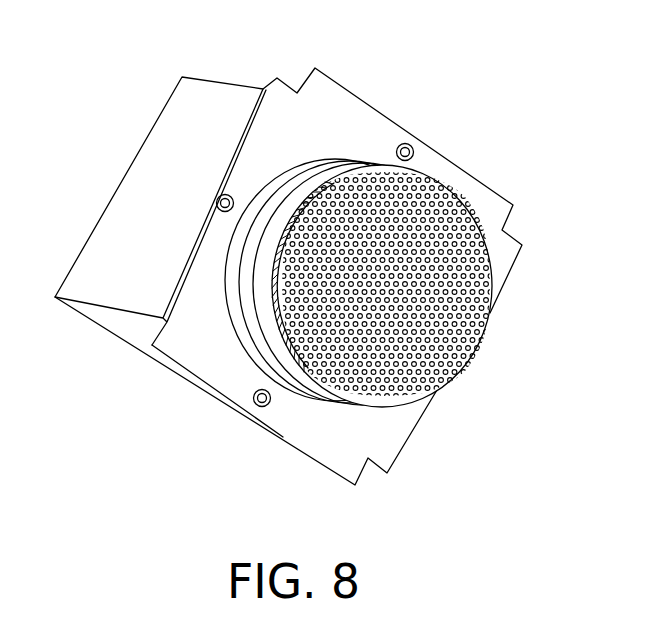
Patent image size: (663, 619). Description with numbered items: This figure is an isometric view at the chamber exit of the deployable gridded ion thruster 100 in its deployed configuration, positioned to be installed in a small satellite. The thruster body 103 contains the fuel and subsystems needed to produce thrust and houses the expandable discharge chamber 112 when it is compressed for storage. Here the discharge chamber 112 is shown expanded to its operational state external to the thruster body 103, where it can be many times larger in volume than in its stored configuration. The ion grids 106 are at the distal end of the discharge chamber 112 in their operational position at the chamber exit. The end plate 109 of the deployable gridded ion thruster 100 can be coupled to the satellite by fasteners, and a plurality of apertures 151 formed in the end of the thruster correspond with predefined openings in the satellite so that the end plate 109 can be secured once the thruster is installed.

The deployable gridded ion thruster 100 is at (115, 48).
The thruster body 103 is at (152, 148).
The ion grids 106 is at (427, 210).
The end plate 109 is at (488, 225).
The discharge chamber 112 is at (218, 282).
The apertures 151 is at (400, 150).